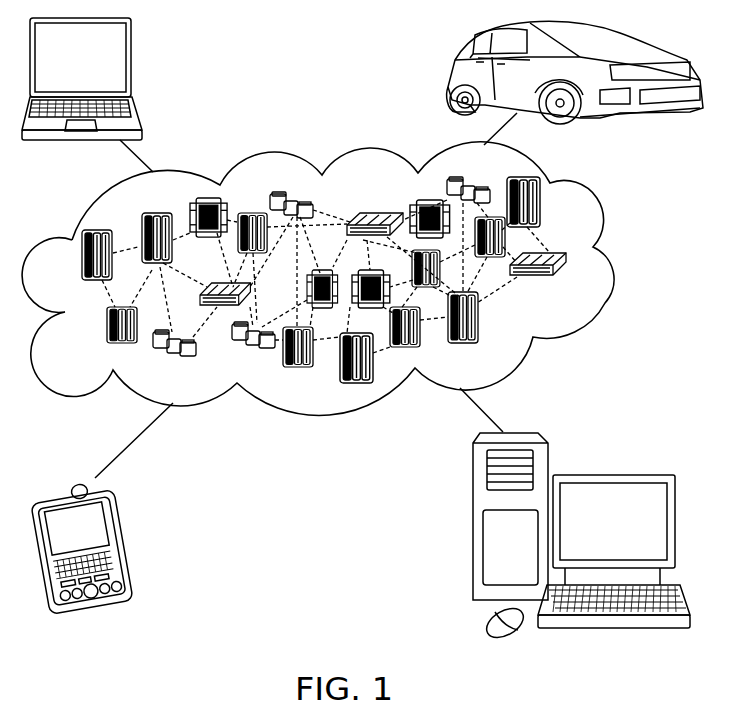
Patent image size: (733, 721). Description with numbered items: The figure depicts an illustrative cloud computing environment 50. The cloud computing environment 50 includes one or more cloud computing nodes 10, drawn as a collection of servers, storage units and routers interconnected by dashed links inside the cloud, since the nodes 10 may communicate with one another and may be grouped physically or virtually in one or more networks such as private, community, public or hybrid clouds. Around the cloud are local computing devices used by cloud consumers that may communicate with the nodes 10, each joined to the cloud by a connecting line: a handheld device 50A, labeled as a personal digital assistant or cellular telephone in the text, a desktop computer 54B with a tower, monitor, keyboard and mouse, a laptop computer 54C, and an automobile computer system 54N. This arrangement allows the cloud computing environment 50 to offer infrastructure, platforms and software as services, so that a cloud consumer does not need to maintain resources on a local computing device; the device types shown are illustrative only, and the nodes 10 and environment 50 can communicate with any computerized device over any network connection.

The cloud computing node 10 is at (604, 305).
The cloud computing environment 50 is at (610, 262).
The personal digital assistant or cellular telephone 50A is at (125, 542).
The desktop computer 54B is at (613, 475).
The laptop computer 54C is at (133, 60).
The automobile computer system 54N is at (452, 70).